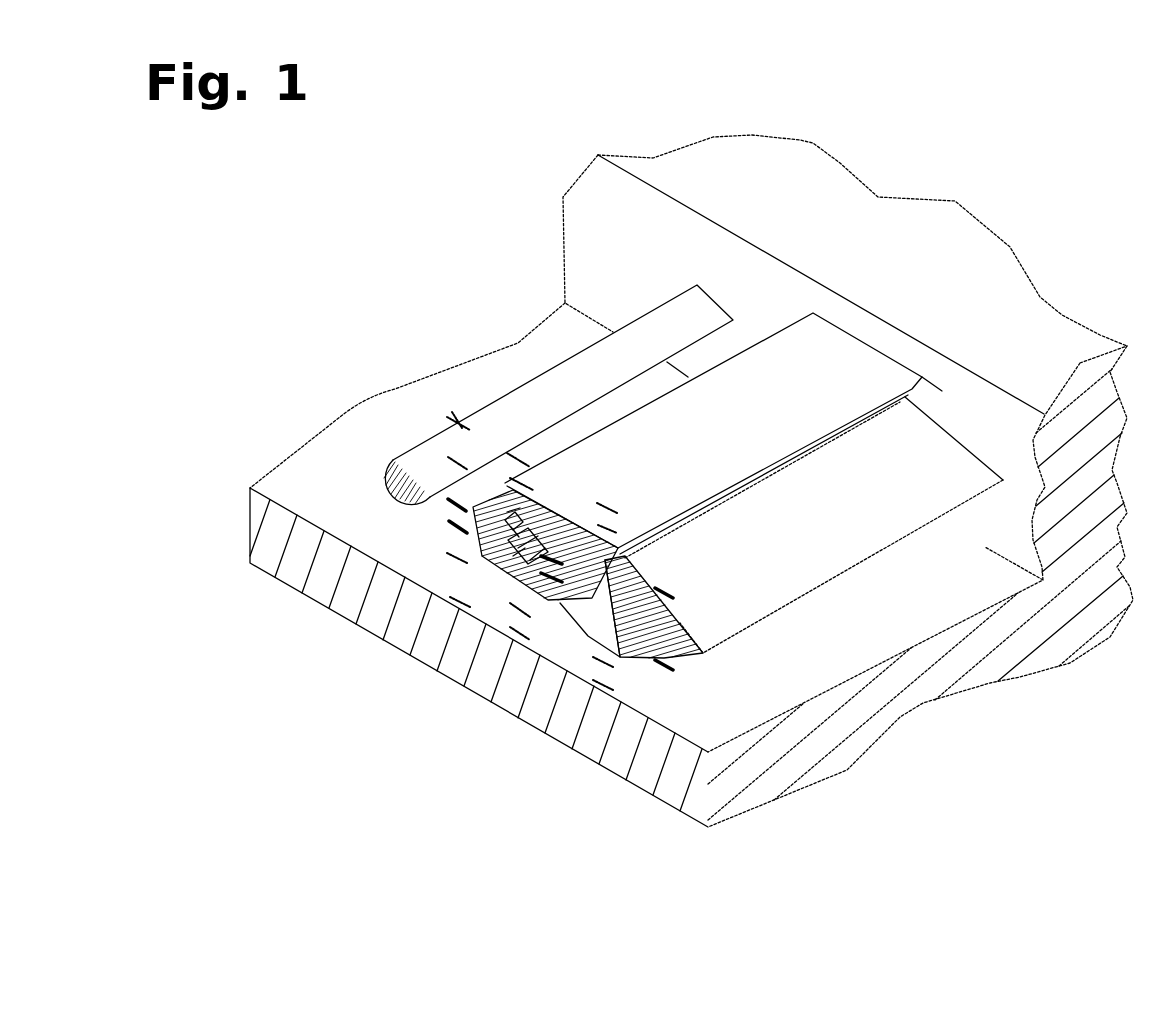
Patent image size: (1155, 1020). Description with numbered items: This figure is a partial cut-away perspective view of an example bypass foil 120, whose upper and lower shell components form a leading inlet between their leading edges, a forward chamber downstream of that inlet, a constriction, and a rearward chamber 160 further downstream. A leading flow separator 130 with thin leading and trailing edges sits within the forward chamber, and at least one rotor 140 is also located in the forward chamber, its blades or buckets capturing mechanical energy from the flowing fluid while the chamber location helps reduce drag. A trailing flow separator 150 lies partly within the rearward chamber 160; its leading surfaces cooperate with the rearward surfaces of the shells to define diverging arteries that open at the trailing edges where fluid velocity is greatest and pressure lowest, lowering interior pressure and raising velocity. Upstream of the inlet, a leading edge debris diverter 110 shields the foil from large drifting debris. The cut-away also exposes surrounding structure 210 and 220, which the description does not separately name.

The leading edge debris diverter 110 is at (428, 440).
The bypass foil 120 is at (493, 530).
The leading flow separator 130 is at (514, 535).
The rotor 140 is at (755, 620).
The trailing flow separator 150 is at (912, 383).
The rearward chamber 160 is at (592, 645).
The upper cover 210 is at (592, 170).
The side housing 220 is at (940, 650).